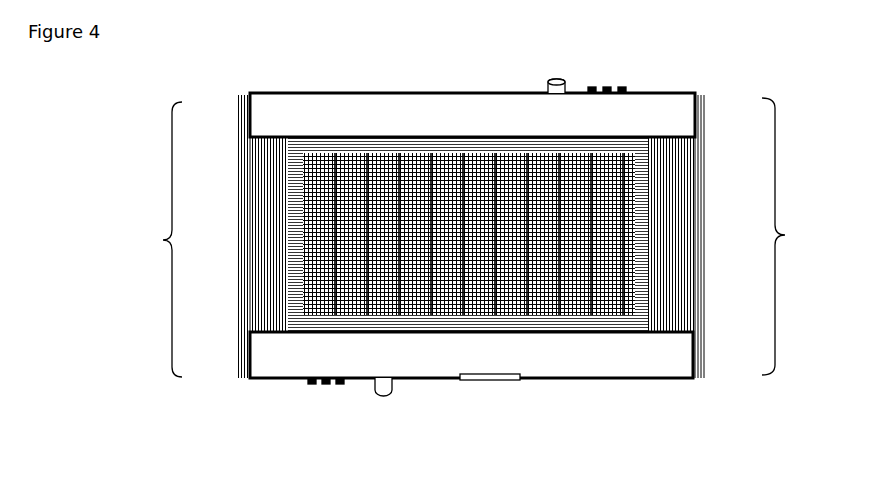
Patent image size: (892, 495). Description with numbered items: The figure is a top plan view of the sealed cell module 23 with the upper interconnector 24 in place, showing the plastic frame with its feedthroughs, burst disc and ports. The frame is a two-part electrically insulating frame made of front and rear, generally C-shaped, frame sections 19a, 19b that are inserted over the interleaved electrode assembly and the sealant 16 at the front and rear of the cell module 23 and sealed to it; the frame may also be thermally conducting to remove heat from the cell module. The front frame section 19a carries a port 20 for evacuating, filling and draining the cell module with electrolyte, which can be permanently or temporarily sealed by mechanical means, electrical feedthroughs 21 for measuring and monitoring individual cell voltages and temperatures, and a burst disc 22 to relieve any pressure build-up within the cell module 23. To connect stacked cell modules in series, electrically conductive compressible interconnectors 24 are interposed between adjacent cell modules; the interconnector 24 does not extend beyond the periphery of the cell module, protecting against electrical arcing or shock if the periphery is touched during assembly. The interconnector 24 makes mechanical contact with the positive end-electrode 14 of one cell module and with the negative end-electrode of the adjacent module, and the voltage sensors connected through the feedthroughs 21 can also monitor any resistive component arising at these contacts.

The positive end-electrode 14 is at (641, 271).
The sealant 16 is at (676, 187).
The front frame section 19a is at (612, 358).
The rear frame section 19b is at (295, 113).
The port 20 is at (555, 78).
The electrical feedthroughs 21 is at (624, 56).
The burst disc 22 is at (490, 384).
The cell module 23 is at (465, 237).
The interconnector 24 is at (540, 205).